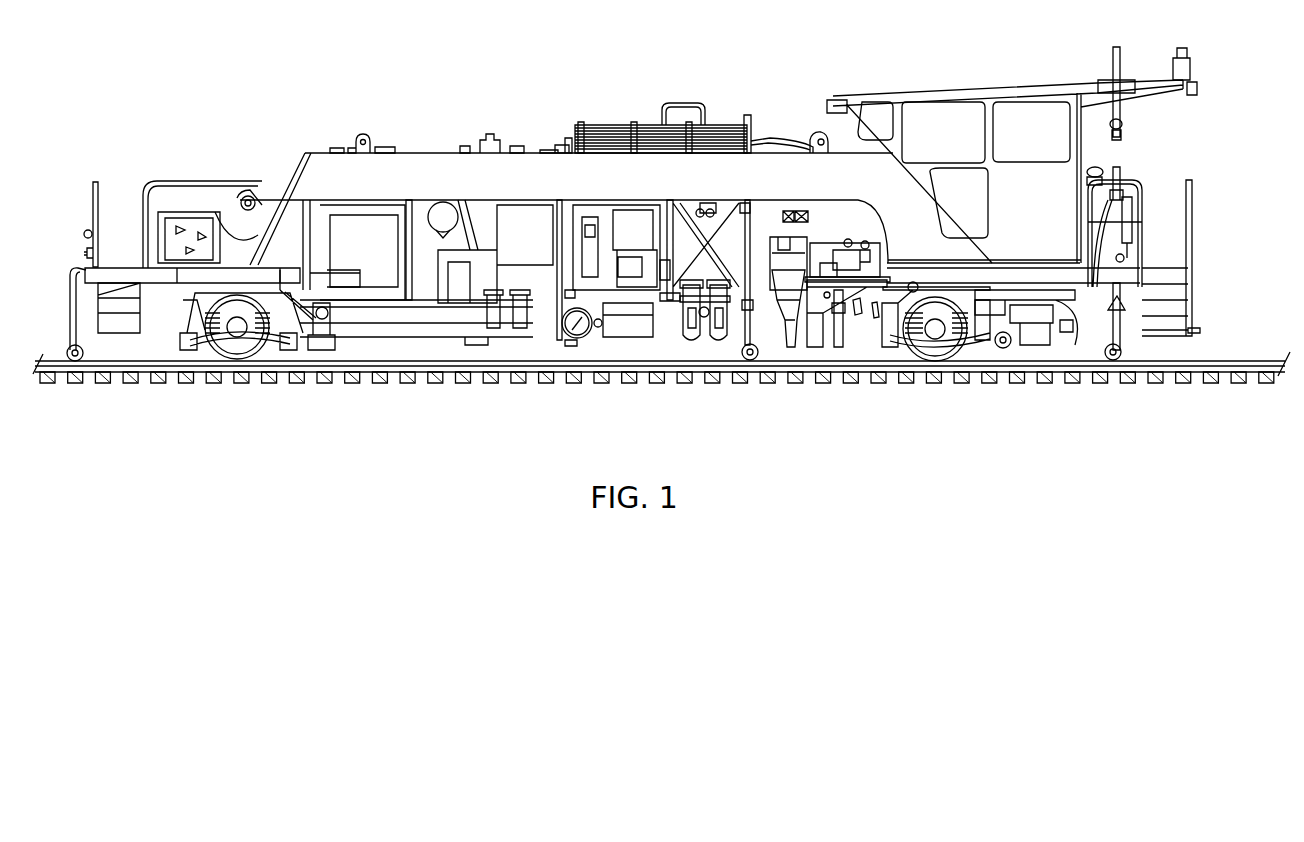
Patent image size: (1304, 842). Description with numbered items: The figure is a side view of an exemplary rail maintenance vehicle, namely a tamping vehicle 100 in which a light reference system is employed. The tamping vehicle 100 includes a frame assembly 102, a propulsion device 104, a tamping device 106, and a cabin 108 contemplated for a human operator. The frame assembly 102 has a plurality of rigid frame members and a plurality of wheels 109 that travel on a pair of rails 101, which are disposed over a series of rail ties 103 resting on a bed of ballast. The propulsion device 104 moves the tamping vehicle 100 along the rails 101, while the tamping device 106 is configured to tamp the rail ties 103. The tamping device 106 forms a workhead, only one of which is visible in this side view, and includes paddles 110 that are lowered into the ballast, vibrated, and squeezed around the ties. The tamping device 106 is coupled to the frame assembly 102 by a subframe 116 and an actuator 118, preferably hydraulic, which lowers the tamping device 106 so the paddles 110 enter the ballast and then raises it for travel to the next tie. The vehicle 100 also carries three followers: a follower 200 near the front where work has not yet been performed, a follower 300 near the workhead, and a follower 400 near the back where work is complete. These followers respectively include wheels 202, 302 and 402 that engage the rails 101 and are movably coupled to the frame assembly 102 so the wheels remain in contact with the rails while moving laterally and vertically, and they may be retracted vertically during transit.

The tamping vehicle 100 is at (586, 70).
The rails 101 is at (1262, 366).
The frame assembly 102 is at (428, 162).
The rail ties 103 is at (352, 383).
The propulsion device 104 is at (352, 240).
The tamping device 106 is at (849, 336).
The cabin 108 is at (988, 102).
The wheels 109 is at (237, 359).
The paddles 110 is at (793, 348).
The subframe 116 is at (792, 216).
The actuator 118 is at (809, 216).
The follower 200 is at (61, 346).
The wheel 202 is at (73, 359).
The follower 300 is at (730, 344).
The wheel 302 is at (750, 358).
The follower 400 is at (1119, 345).
The wheel 402 is at (1113, 361).